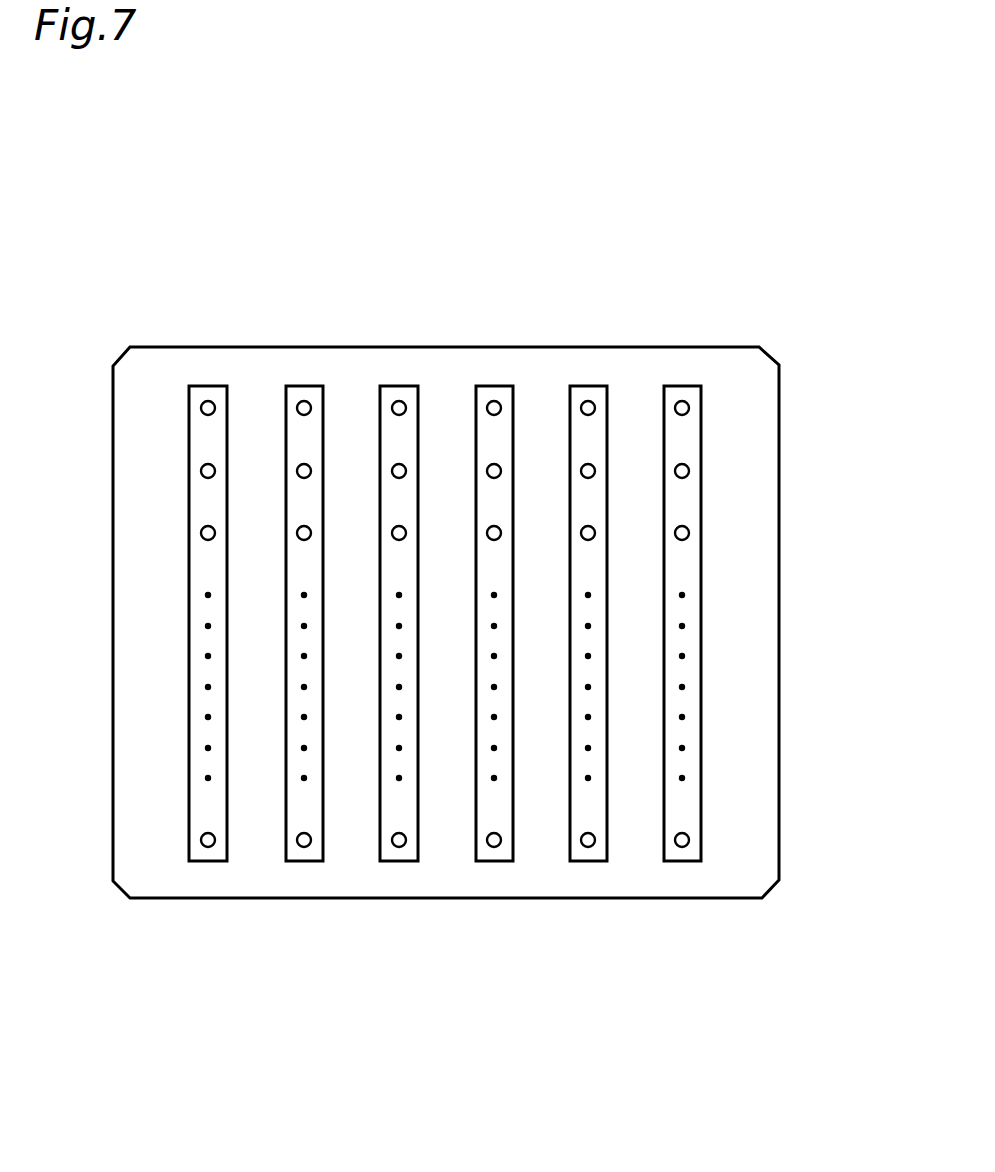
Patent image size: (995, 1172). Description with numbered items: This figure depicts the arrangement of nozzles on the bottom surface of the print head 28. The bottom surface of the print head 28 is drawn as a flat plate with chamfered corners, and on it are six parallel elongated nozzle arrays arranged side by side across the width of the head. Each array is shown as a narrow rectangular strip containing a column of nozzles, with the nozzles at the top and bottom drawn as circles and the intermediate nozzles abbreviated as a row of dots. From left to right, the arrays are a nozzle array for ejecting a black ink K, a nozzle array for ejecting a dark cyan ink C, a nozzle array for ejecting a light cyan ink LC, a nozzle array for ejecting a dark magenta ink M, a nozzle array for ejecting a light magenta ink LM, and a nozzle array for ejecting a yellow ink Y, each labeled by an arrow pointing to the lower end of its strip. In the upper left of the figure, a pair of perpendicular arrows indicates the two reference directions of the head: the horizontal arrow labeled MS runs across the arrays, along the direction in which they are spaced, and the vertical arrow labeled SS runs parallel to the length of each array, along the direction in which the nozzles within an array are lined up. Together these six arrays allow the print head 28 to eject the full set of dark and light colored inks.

The print head 28 is at (779, 489).
The black ink K is at (208, 864).
The dark cyan ink C is at (304, 864).
The light cyan ink LC is at (399, 864).
The dark magenta ink M is at (494, 864).
The light magenta ink LM is at (588, 864).
The yellow ink Y is at (682, 864).
The main scanning direction MS is at (67, 380).
The sub scanning direction SS is at (74, 366).